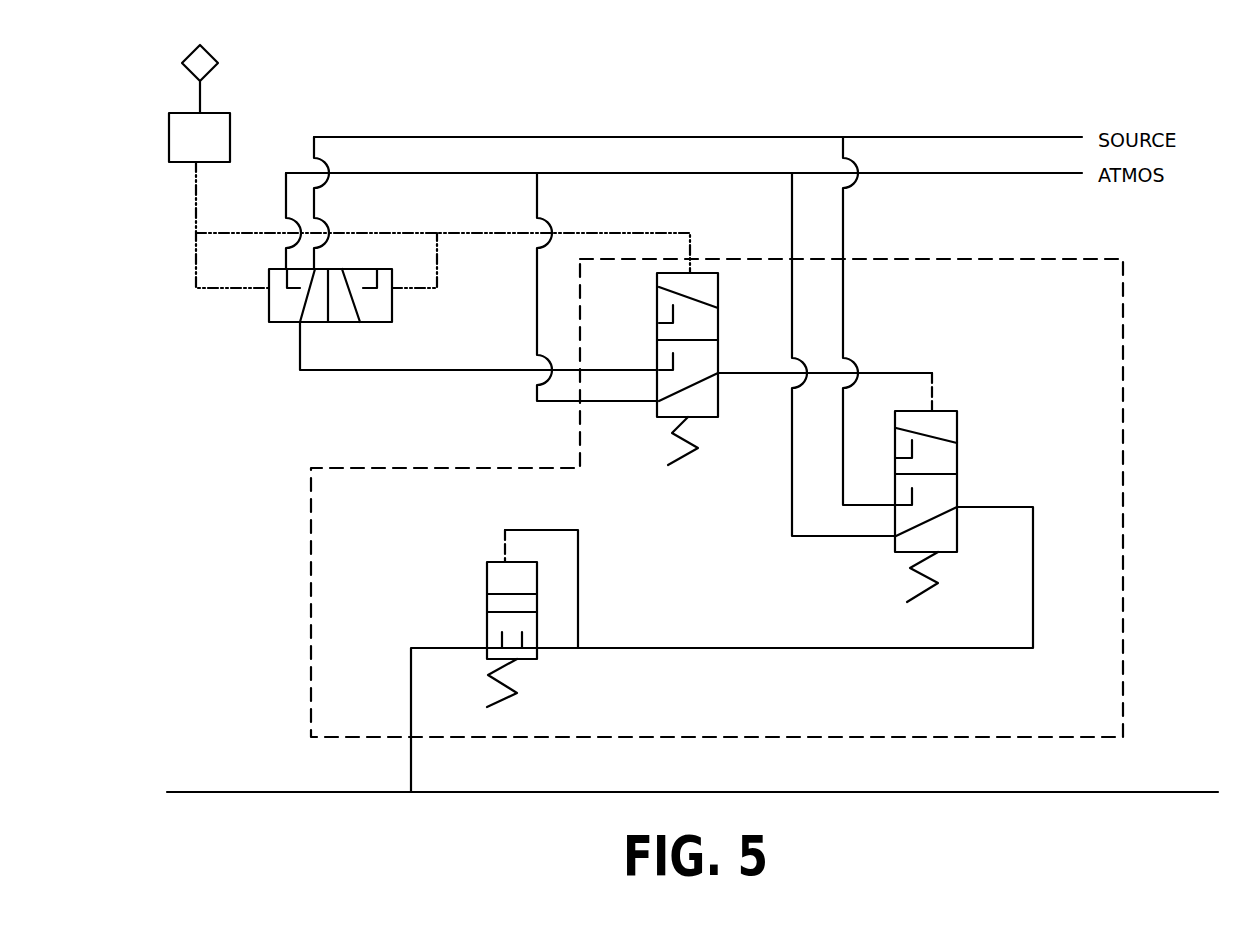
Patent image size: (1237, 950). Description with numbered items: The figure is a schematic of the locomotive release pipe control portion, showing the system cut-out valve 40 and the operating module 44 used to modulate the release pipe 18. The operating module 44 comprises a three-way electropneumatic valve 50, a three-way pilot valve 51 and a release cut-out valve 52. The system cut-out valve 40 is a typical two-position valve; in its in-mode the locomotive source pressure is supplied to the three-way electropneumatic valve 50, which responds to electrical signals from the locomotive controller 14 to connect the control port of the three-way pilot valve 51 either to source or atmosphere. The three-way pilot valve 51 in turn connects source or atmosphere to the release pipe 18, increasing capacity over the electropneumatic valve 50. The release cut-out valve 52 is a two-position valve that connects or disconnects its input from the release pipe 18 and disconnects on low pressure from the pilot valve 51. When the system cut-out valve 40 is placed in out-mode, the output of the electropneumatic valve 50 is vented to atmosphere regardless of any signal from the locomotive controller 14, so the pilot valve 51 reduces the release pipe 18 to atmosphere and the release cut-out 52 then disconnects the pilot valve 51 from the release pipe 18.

The locomotive controller 14 is at (429, 166).
The release pipe 18 is at (692, 778).
The system cut-out valve 40 is at (392, 306).
The operating module 44 is at (1125, 355).
The three-way electropneumatic valve 50 is at (657, 312).
The three-way pilot valve 51 is at (957, 422).
The release cut-out valve 52 is at (487, 570).